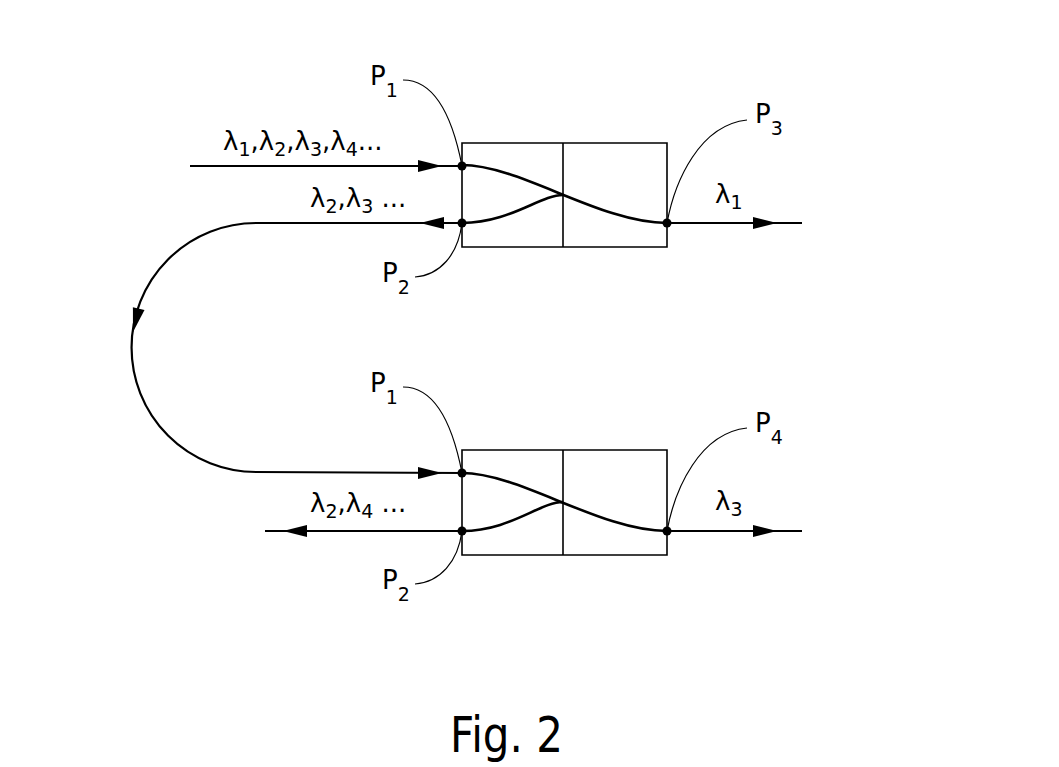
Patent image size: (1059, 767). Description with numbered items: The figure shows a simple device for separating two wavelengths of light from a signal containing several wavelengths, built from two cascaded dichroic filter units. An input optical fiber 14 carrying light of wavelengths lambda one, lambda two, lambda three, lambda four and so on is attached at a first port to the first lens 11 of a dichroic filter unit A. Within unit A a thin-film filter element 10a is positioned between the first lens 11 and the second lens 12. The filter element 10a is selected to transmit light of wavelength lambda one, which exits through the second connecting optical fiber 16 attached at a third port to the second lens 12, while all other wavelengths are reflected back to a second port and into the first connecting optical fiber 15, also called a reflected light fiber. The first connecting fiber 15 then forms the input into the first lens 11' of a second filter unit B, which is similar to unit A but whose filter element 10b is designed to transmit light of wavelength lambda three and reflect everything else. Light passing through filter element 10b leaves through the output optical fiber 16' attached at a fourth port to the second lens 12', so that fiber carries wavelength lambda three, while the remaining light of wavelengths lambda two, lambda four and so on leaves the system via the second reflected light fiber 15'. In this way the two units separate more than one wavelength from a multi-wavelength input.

The dichroic filter unit A is at (599, 111).
The second filter unit B is at (597, 419).
The filter element 10a is at (563, 143).
The filter element 10b is at (565, 450).
The first lens 11 is at (510, 233).
The first lens 11' is at (509, 539).
The second lens 12 is at (637, 223).
The second lens 12' is at (627, 532).
The input optical fiber 14 is at (222, 166).
The first connecting optical fiber 15 is at (258, 367).
The second reflected light fiber 15' is at (332, 568).
The second connecting optical fiber 16 is at (734, 257).
The output optical fiber 16' is at (734, 565).